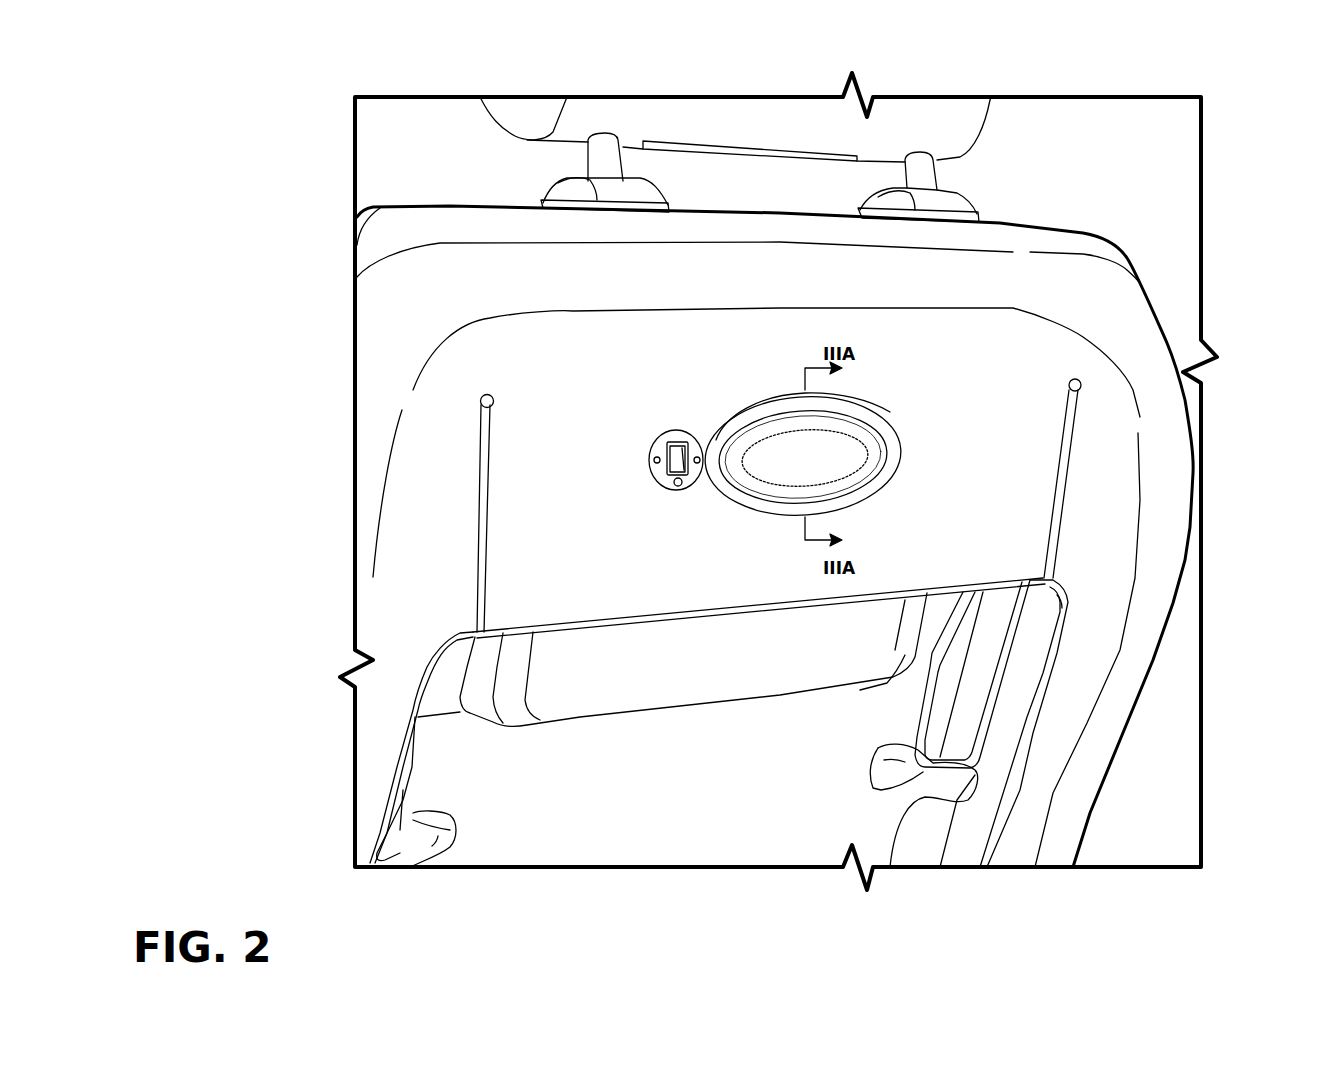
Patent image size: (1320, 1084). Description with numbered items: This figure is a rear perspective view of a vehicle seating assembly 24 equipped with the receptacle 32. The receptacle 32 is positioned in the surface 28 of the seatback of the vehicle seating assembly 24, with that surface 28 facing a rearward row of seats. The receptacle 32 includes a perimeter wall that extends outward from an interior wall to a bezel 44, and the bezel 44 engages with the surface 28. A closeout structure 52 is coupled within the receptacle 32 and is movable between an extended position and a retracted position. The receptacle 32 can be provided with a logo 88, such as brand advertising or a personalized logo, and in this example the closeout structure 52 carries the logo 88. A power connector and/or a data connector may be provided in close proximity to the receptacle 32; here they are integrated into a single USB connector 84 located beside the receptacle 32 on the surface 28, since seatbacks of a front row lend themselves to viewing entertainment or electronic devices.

The vehicle seating assembly 24 is at (305, 178).
The surface 28 is at (950, 420).
The receptacle 32 is at (856, 394).
The bezel 44 is at (753, 412).
The closeout structure 52 is at (808, 490).
The USB connector 84 is at (650, 447).
The logo 88 is at (850, 437).